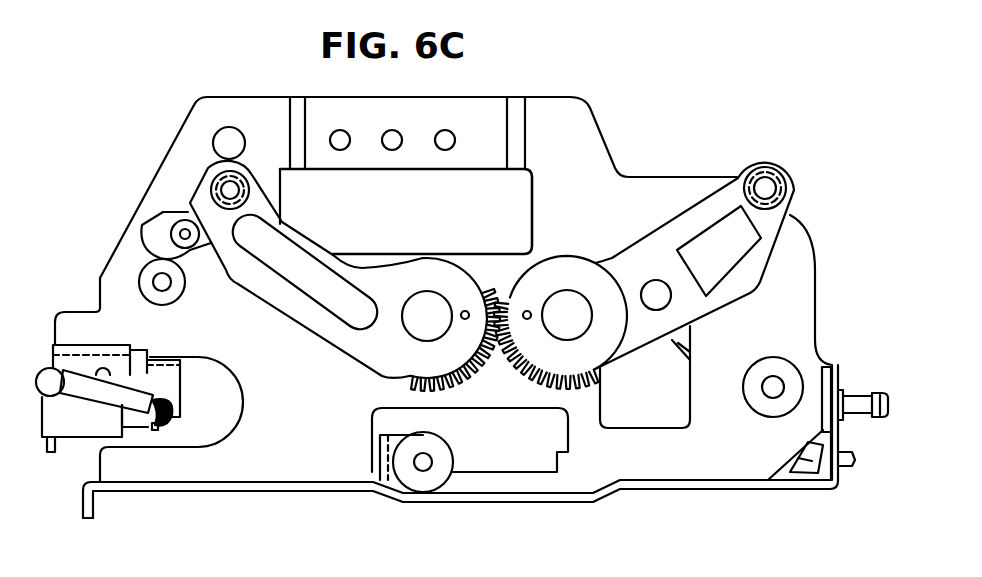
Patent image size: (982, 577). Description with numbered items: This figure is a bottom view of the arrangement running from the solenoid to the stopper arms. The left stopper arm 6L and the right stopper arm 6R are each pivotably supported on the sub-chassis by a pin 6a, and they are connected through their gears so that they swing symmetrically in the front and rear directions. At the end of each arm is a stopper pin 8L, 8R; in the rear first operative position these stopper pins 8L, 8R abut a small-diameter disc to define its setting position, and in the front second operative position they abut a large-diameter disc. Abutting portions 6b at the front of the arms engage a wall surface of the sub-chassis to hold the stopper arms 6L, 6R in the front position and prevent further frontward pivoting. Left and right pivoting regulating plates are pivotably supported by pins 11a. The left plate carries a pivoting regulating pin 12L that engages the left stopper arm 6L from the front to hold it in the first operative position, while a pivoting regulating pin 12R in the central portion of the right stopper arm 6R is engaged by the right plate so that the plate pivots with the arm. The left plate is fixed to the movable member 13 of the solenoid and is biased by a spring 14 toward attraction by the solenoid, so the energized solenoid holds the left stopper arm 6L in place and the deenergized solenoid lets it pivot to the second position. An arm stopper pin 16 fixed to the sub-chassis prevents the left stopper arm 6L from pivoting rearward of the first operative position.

The pin 6a is at (426, 292).
The abutting portion 6b is at (243, 287).
The left stopper arm 6L is at (320, 316).
The right stopper arm 6R is at (655, 250).
The stopper pin 8L is at (213, 175).
The stopper pin 8R is at (770, 185).
The pin 11a is at (162, 282).
The pivoting regulating pin 12L is at (185, 232).
The pivoting regulating pin 12R is at (658, 296).
The movable member 13 is at (137, 427).
The spring 14 is at (83, 380).
The arm stopper pin 16 is at (230, 127).